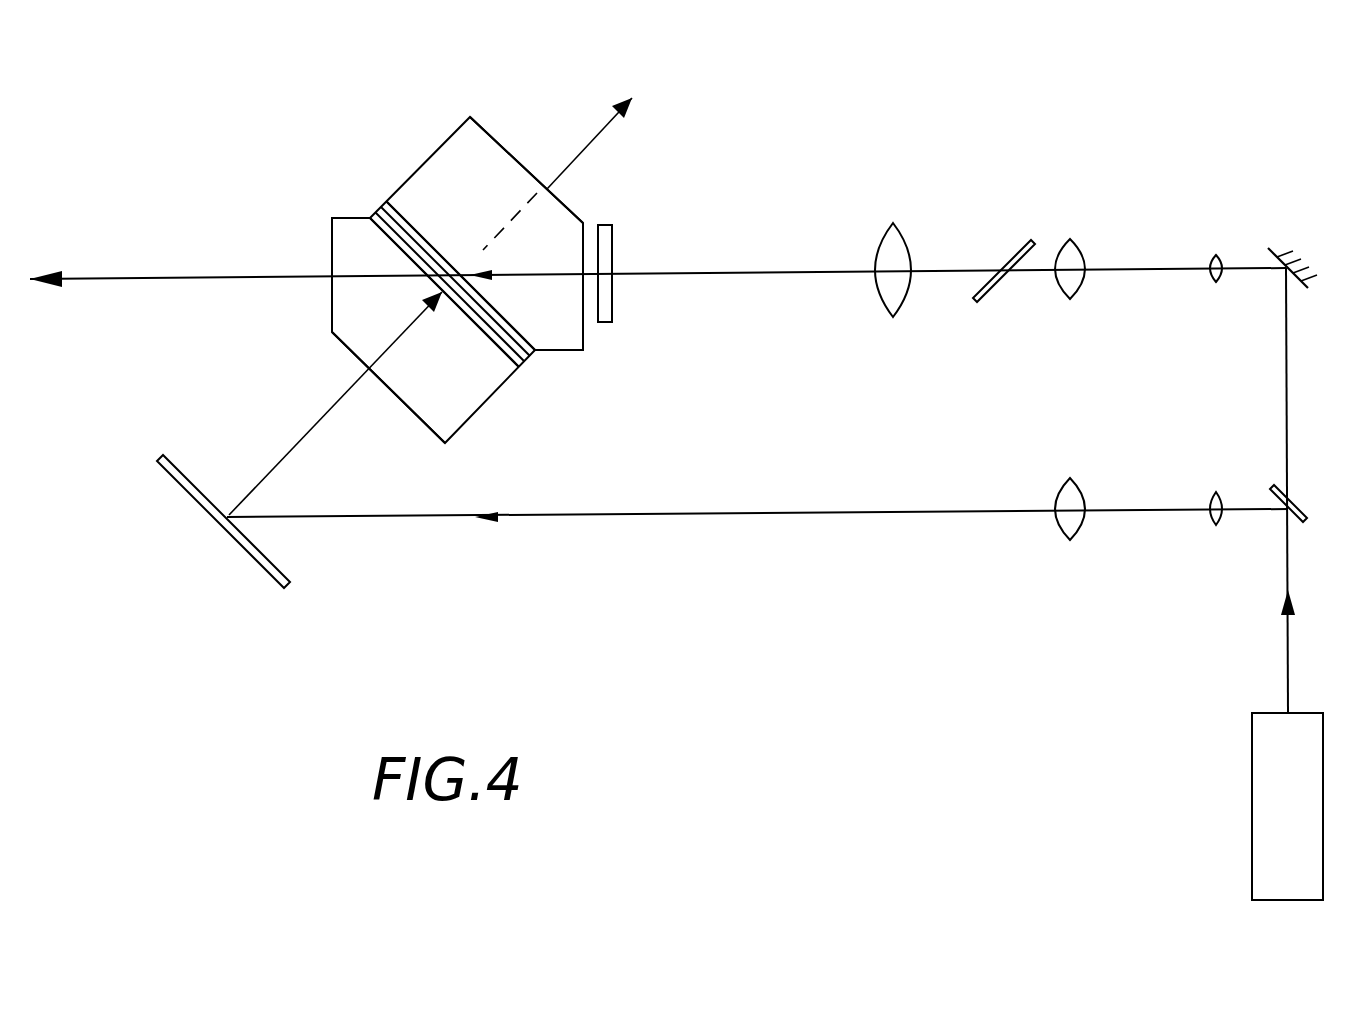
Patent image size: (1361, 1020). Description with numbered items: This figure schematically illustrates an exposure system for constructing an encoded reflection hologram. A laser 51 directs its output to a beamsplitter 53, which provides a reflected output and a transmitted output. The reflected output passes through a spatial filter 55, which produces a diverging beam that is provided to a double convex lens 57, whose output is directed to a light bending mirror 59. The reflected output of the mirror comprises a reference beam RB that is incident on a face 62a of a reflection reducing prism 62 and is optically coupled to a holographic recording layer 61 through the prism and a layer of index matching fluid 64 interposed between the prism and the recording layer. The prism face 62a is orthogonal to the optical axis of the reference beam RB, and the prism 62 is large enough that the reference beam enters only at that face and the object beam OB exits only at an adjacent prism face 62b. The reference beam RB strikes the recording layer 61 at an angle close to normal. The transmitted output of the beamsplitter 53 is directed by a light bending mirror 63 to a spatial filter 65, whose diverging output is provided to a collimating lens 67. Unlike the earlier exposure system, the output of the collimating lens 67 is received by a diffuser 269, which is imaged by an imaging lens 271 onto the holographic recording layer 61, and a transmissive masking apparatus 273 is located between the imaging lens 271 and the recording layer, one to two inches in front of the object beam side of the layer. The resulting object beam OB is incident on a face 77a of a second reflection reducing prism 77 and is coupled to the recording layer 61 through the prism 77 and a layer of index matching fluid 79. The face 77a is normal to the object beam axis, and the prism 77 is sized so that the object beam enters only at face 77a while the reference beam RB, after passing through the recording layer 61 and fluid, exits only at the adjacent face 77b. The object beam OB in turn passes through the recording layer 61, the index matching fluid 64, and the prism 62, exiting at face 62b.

The laser 51 is at (1252, 808).
The beamsplitter 53 is at (1305, 522).
The spatial filter 55 is at (1214, 525).
The double convex lens 57 is at (1078, 540).
The light bending mirror 59 is at (258, 567).
The holographic recording layer 61 is at (380, 213).
The reflection reducing prism 62 is at (480, 398).
The prism face 62a is at (425, 430).
The prism face 62b is at (330, 233).
The light bending mirror 63 is at (1308, 288).
The index matching fluid 64 is at (522, 360).
The spatial filter 65 is at (1216, 254).
The collimating lens 67 is at (1074, 240).
The reflection reducing prism 77 is at (455, 138).
The prism face 77a is at (600, 242).
The prism face 77b is at (491, 134).
The index matching fluid 79 is at (384, 210).
The diffuser 269 is at (988, 296).
The imaging lens 271 is at (897, 318).
The transmissive masking apparatus 273 is at (605, 322).
The object beam OB is at (531, 275).
The reference beam RB is at (298, 442).